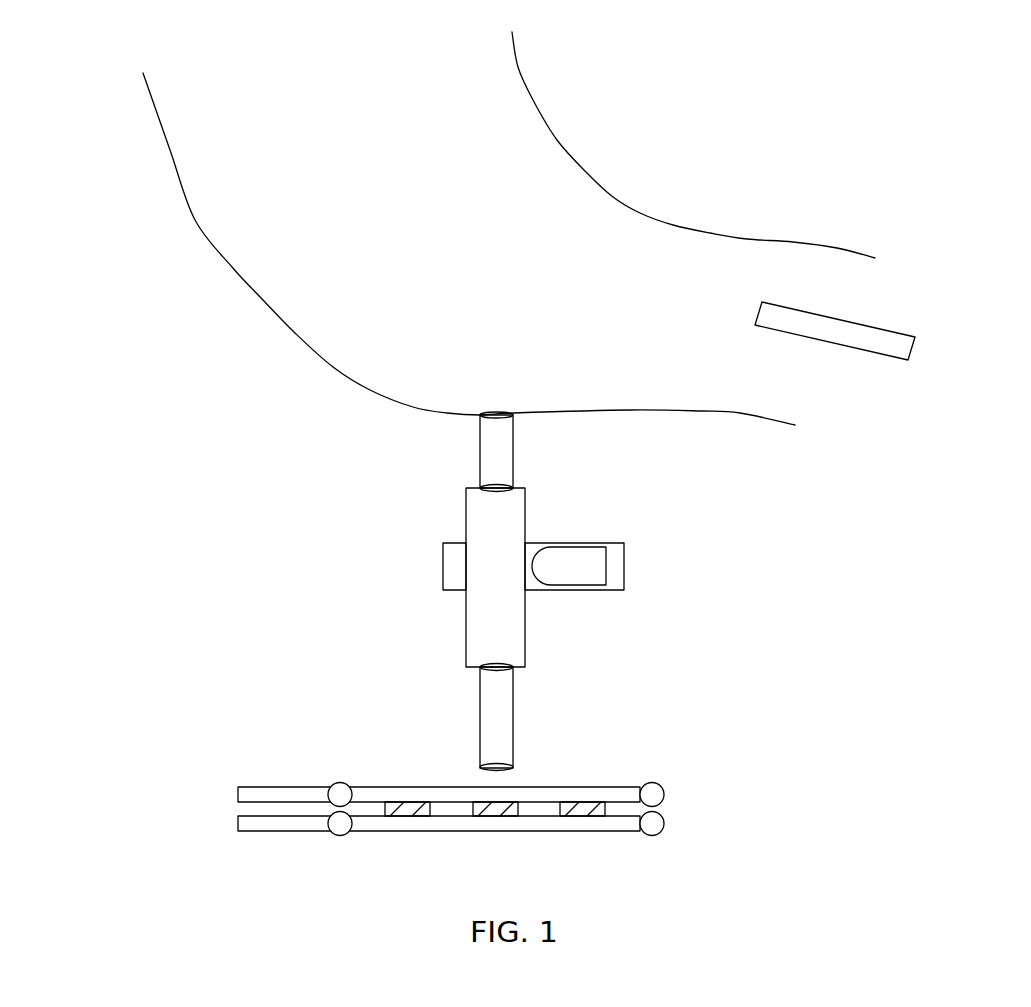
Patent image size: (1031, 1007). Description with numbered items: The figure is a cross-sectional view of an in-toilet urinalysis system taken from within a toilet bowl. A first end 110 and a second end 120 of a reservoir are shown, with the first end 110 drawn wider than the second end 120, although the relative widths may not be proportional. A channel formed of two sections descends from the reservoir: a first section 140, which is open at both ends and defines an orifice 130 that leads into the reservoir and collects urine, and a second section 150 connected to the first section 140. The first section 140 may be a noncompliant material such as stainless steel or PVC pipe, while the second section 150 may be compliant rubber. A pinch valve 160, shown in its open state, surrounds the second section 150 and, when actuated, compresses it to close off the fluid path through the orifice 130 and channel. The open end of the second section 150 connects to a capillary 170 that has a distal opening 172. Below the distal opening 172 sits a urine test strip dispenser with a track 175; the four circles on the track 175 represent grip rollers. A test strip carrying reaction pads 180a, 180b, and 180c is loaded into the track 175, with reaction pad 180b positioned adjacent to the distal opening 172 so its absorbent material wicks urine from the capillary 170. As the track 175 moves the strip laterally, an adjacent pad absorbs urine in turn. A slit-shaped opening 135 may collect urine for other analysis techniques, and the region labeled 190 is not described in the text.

The first end 110 is at (428, 97).
The second end 120 is at (575, 287).
The orifice 130 is at (497, 412).
The slit-shaped opening 135 is at (888, 343).
The first section 140 is at (480, 438).
The second section 150 is at (466, 508).
The pinch valve 160 is at (625, 566).
The capillary 170 is at (513, 690).
The distal opening 172 is at (500, 772).
The track 175 is at (235, 778).
The reaction pad 180a is at (412, 808).
The reaction pad 180b is at (500, 808).
The reaction pad 180c is at (590, 808).
The region 190 is at (624, 481).